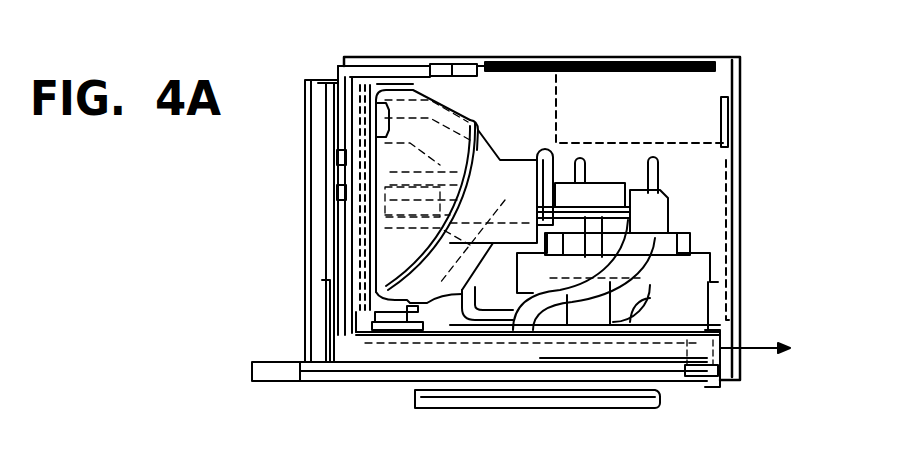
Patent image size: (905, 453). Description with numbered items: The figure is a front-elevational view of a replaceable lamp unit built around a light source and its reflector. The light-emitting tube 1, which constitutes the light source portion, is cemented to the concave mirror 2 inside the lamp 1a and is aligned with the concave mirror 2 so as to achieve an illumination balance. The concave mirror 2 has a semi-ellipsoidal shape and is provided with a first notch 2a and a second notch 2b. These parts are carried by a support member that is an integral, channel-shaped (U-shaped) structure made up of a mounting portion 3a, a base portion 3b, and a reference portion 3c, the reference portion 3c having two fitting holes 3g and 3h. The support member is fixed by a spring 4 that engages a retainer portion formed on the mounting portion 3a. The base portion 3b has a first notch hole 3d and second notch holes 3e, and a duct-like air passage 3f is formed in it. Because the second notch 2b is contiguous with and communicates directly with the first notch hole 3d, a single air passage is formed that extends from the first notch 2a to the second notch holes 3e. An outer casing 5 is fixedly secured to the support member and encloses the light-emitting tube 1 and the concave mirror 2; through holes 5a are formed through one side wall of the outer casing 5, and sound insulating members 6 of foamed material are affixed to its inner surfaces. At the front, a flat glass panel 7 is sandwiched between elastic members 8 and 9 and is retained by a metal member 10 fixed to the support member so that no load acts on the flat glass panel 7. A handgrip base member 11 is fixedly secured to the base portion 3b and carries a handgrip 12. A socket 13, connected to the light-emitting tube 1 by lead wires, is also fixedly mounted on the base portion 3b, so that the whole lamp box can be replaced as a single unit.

The light-emitting tube 1 is at (345, 172).
The lamp 1a is at (393, 237).
The concave mirror 2 is at (448, 112).
The first notch 2a is at (380, 88).
The second notch 2b is at (411, 313).
The mounting portion 3a is at (345, 285).
The base portion 3b is at (340, 367).
The reference portion 3c is at (408, 66).
The first notch hole 3d is at (378, 340).
The second notch holes 3e is at (742, 355).
The duct-like air passage 3f is at (655, 348).
The fitting hole 3g is at (440, 64).
The fitting hole 3h is at (440, 64).
The spring 4 is at (480, 124).
The outer casing 5 is at (740, 80).
The through holes 5a is at (657, 110).
The sound insulating members 6 is at (633, 62).
The flat glass panel 7 is at (330, 323).
The elastic member 8 is at (333, 142).
The elastic member 9 is at (318, 107).
The metal member 10 is at (311, 197).
The handgrip base member 11 is at (707, 390).
The handgrip 12 is at (655, 410).
The socket 13 is at (663, 243).